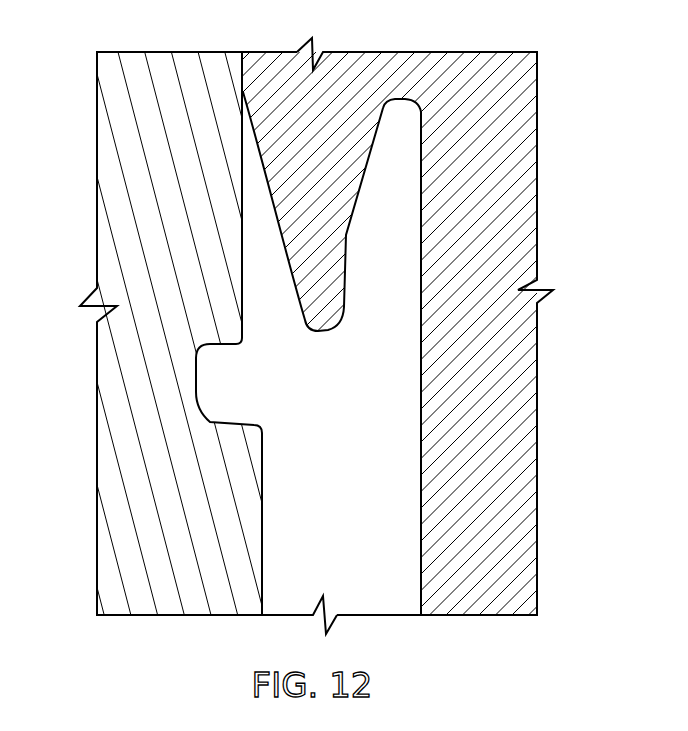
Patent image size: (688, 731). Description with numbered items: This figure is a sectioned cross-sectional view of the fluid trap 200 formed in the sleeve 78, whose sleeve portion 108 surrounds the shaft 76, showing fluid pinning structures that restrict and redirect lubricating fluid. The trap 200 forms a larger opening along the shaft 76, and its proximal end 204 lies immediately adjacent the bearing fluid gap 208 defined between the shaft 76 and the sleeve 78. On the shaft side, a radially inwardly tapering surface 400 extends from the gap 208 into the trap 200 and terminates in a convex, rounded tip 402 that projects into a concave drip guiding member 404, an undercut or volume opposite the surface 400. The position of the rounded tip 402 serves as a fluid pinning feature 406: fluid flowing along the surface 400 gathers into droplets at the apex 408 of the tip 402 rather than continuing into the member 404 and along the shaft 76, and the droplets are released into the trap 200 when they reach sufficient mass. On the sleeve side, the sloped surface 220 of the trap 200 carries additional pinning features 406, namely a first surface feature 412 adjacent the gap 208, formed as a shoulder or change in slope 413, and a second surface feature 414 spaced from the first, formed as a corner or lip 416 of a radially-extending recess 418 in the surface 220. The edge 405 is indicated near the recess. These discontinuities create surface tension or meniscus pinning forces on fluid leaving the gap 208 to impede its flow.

The shaft 76 is at (537, 92).
The sleeve 78 is at (86, 113).
The sleeve portion 108 is at (100, 178).
The trap 200 is at (246, 543).
The proximal end 204 is at (229, 222).
The bearing fluid gap 208 is at (243, 94).
The sloped surface 220 is at (258, 590).
The radially inwardly tapering surface 400 is at (283, 262).
The rounded tip 402 is at (348, 337).
The drip guiding member 404 is at (417, 93).
The edge 405 is at (198, 430).
The fluid pinning feature 406 is at (307, 273).
The apex 408 is at (307, 330).
The first surface feature 412 is at (213, 320).
The shoulder or change in slope 413 is at (247, 338).
The second surface feature 414 is at (224, 442).
The corner or lip 416 is at (263, 432).
The radially-extending recess 418 is at (197, 405).